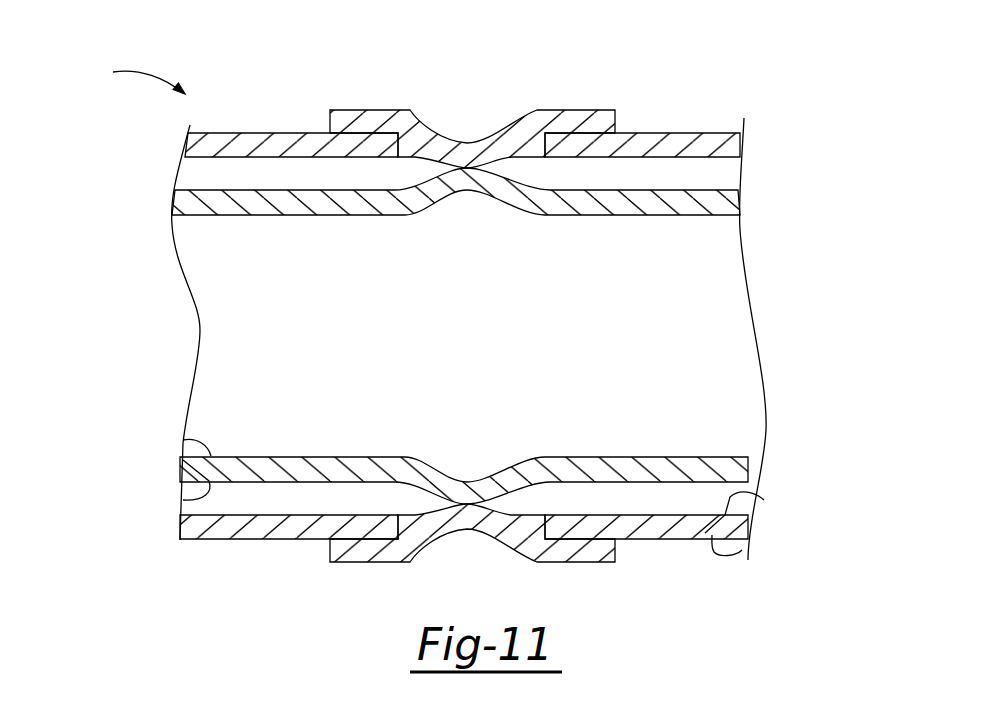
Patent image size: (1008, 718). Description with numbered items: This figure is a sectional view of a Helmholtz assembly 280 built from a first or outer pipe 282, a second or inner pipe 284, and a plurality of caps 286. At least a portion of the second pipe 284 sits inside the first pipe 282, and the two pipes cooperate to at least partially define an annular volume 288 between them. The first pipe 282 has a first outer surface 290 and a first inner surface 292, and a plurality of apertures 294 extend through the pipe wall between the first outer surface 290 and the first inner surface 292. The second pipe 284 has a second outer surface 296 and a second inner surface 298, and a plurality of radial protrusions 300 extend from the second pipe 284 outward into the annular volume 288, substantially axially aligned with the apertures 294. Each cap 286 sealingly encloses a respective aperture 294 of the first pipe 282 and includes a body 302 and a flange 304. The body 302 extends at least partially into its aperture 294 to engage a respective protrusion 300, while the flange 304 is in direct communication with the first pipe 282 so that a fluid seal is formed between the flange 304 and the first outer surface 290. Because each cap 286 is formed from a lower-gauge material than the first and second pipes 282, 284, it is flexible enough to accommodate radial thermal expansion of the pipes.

The Helmholtz assembly 280 is at (129, 79).
The first pipe 282 is at (740, 148).
The second pipe 284 is at (727, 207).
The cap 286 is at (457, 143).
The annular volume 288 is at (253, 177).
The first outer surface 290 is at (742, 550).
The first inner surface 292 is at (764, 500).
The aperture 294 is at (425, 152).
The second outer surface 296 is at (180, 500).
The second inner surface 298 is at (183, 440).
The radial protrusion 300 is at (467, 180).
The body 302 is at (487, 150).
The flange 304 is at (572, 112).